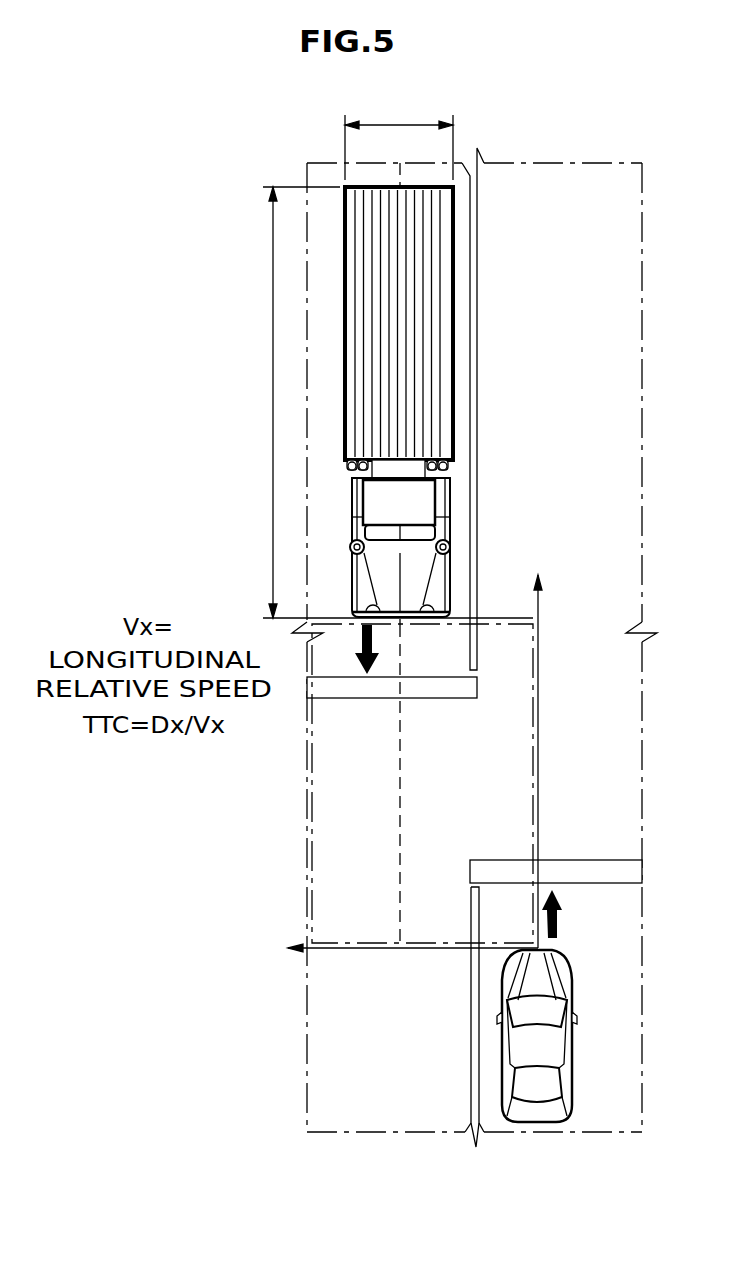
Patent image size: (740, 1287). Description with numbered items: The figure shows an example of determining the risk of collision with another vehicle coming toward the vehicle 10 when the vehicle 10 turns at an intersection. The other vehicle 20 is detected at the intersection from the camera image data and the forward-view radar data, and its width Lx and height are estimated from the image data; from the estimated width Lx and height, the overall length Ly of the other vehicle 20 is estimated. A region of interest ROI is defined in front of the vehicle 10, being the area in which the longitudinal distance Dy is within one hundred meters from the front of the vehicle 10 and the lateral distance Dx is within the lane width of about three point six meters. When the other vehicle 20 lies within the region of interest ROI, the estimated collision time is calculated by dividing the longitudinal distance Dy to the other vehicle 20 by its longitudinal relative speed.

The vehicle 10 is at (565, 962).
The other vehicle 20 is at (449, 320).
The region of interest ROI is at (312, 763).
The lateral distance Dx is at (415, 763).
The longitudinal distance Dy is at (416, 786).
The width Lx is at (399, 137).
The overall length Ly is at (385, 402).